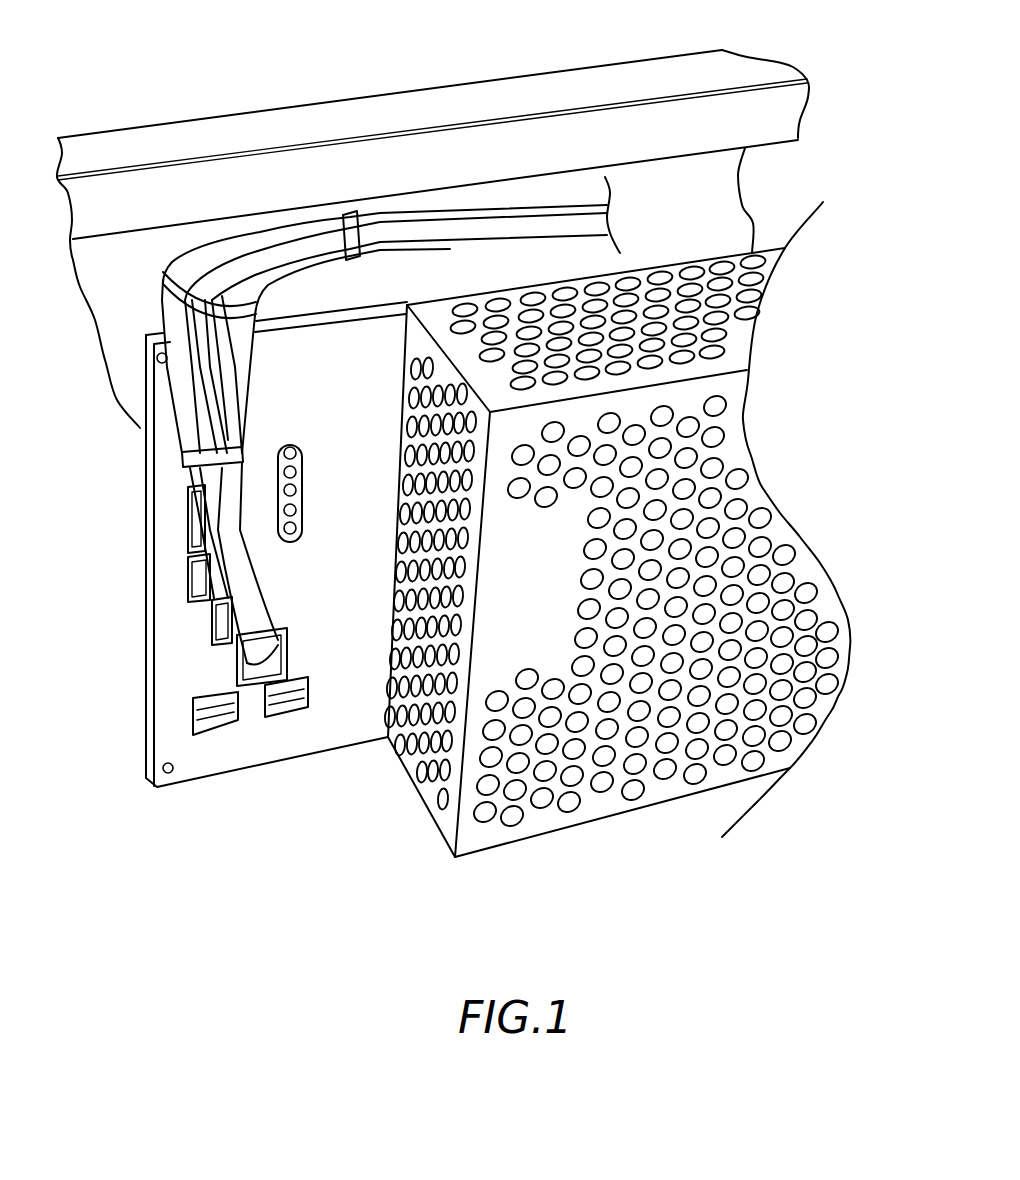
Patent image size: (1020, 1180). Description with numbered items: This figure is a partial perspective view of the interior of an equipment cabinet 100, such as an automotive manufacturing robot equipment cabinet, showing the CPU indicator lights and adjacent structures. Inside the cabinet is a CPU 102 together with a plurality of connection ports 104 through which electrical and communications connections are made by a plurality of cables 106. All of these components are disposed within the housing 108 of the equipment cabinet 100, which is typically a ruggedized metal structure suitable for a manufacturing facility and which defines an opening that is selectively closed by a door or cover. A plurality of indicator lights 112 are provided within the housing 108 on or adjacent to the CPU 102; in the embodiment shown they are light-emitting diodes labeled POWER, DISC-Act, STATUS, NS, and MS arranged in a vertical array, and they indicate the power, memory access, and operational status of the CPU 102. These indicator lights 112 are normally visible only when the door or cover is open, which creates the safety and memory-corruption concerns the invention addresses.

The equipment cabinet 100 is at (745, 203).
The CPU 102 is at (737, 383).
The connection ports 104 is at (180, 560).
The cables 106 is at (162, 434).
The housing 108 is at (768, 102).
The indicator lights 112 is at (256, 496).